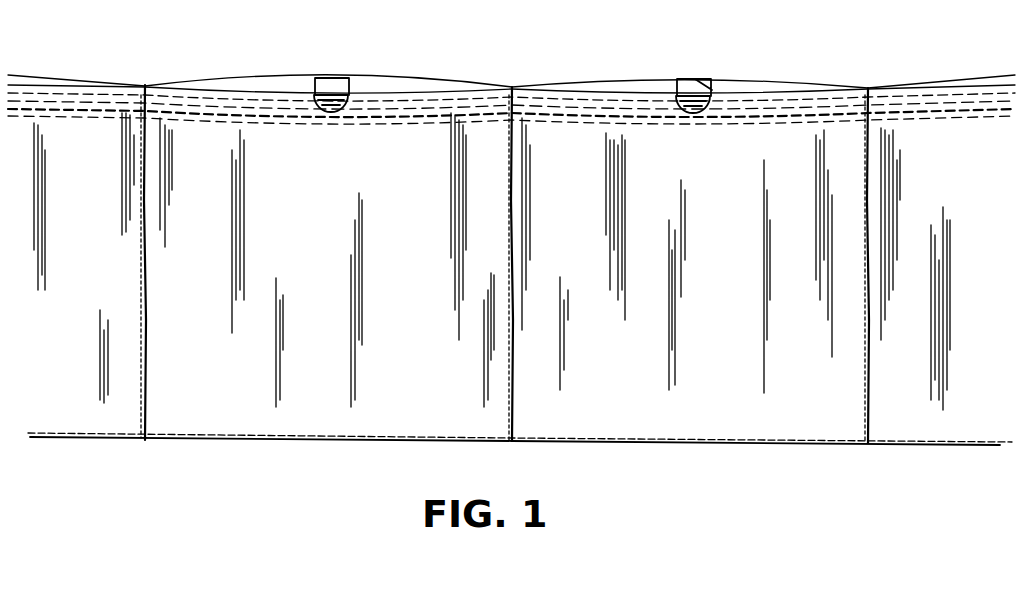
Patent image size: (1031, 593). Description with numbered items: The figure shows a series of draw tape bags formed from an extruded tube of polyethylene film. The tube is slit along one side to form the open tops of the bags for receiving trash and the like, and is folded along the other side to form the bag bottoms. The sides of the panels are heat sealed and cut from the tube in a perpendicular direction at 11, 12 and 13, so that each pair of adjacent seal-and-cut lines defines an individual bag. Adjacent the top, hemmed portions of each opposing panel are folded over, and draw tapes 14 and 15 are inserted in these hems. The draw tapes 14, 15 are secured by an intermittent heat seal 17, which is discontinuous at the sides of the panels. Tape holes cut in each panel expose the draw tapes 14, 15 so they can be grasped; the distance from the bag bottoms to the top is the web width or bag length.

The side seal and cut 11 is at (145, 438).
The side seal and cut 12 is at (512, 441).
The side seal and cut 13 is at (868, 443).
The draw tape 14 is at (322, 92).
The draw tape 15 is at (338, 78).
The intermittent heat seal 17 is at (281, 120).